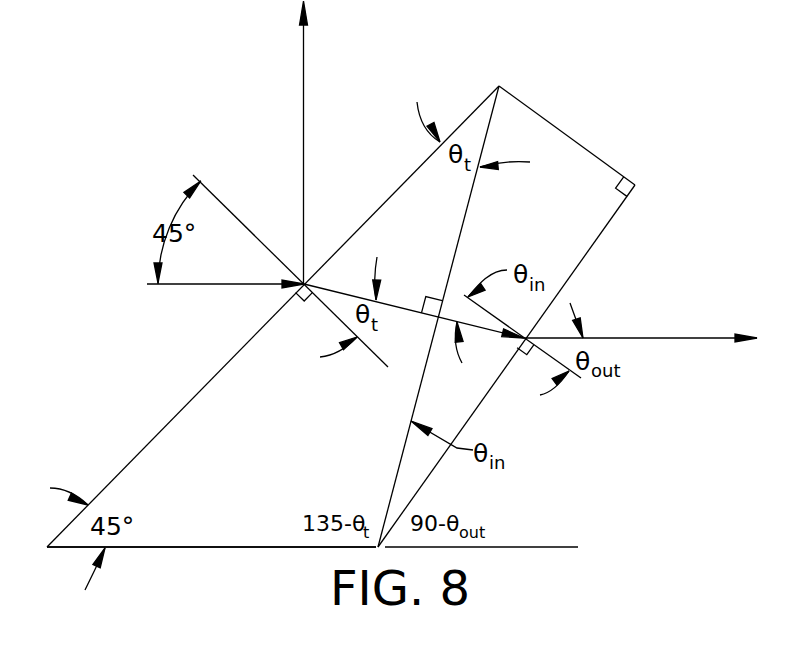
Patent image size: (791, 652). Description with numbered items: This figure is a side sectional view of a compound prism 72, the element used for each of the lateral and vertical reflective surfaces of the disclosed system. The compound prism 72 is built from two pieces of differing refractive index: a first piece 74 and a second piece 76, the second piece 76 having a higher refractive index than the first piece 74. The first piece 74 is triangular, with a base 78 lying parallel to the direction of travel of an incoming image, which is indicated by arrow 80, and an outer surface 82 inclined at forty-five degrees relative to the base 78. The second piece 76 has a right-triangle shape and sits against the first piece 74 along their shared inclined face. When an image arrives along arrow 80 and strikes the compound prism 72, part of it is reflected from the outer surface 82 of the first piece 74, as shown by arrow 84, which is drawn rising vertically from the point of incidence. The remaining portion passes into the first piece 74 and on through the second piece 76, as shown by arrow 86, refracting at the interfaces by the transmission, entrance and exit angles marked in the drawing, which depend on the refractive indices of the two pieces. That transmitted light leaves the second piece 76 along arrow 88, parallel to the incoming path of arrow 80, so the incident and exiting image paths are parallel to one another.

The compound prism 72 is at (93, 248).
The first piece 74 is at (300, 462).
The second piece 76 is at (547, 236).
The base 78 is at (242, 545).
The arrow 80 is at (218, 285).
The outer surface 82 is at (187, 403).
The arrow 84 is at (303, 143).
The arrow 86 is at (408, 307).
The arrow 88 is at (643, 338).